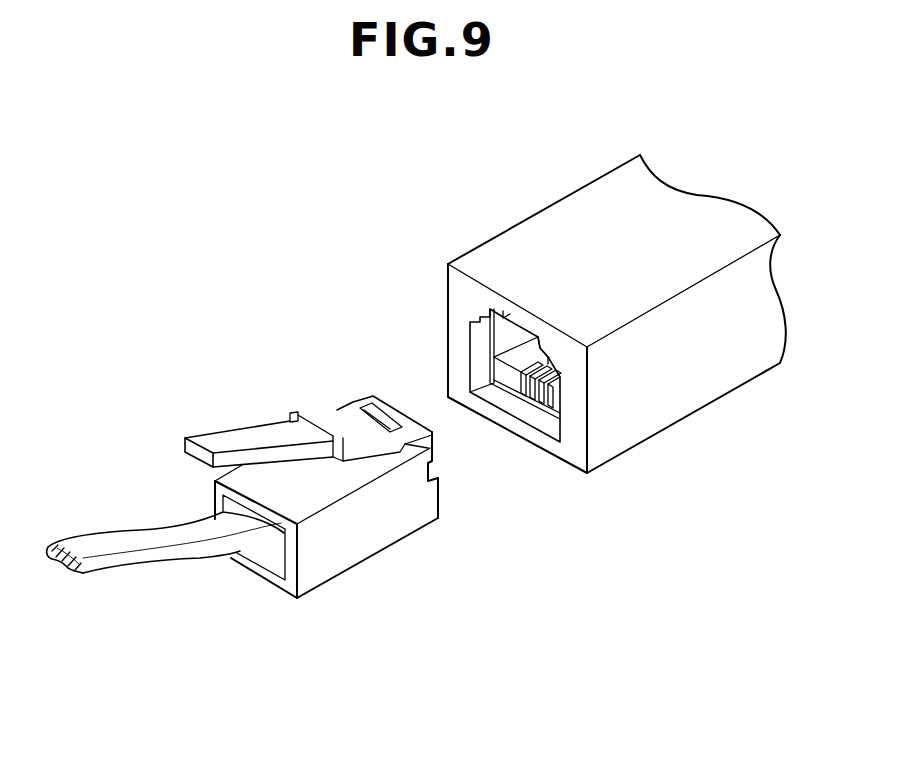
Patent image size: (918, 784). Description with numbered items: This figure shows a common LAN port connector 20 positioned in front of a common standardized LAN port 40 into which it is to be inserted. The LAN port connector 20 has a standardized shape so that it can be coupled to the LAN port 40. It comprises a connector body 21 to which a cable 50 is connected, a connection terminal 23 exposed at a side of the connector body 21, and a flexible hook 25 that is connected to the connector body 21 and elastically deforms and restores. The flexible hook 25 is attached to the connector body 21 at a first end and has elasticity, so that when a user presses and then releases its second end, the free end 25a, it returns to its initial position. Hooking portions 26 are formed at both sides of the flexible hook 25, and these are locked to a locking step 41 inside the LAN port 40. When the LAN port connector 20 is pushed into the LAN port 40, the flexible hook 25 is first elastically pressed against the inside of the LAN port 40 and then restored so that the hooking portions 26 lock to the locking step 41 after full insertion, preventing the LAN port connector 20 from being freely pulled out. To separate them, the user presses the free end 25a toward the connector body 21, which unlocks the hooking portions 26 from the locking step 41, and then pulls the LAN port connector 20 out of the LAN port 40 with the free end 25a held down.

The LAN port connector 20 is at (332, 585).
The connector body 21 is at (383, 538).
The connection terminal 23 is at (446, 508).
The flexible hook 25 is at (252, 421).
The free end 25a is at (210, 443).
The hooking portions 26 is at (347, 438).
The LAN port 40 is at (438, 303).
The locking step 41 is at (503, 316).
The cable 50 is at (132, 557).